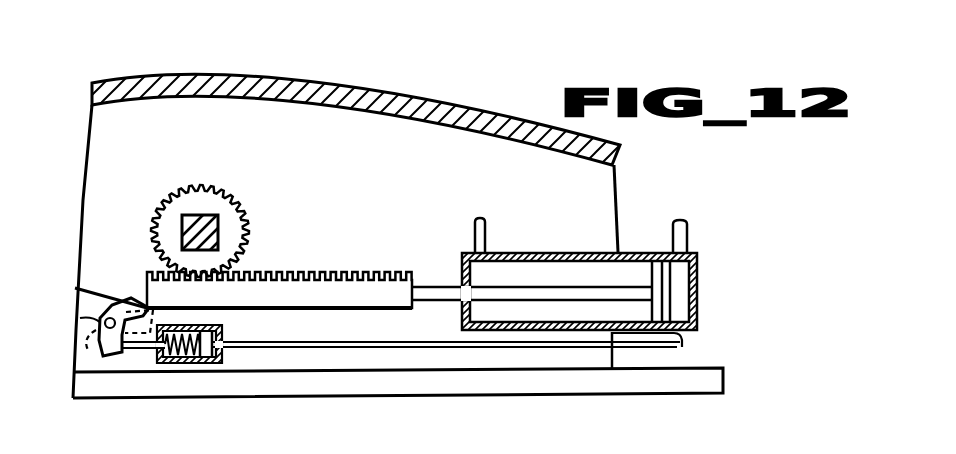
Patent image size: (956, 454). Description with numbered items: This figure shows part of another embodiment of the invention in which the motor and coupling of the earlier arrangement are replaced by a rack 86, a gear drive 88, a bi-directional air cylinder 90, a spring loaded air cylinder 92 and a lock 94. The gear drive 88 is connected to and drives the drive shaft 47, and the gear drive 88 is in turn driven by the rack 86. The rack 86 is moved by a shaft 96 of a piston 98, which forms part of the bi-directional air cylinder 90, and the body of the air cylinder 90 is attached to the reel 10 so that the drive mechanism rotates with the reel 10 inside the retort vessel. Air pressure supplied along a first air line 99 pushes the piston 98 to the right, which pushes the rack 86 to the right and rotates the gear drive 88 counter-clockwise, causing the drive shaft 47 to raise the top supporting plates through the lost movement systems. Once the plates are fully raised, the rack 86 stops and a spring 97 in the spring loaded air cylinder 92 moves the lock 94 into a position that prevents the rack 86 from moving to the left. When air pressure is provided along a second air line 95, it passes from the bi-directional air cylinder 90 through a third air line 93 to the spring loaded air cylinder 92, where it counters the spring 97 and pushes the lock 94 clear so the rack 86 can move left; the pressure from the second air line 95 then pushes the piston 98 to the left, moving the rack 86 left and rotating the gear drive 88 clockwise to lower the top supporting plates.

The reel 10 is at (215, 78).
The drive shaft 47 is at (182, 237).
The rack 86 is at (316, 279).
The gear drive 88 is at (198, 192).
The bi-directional air cylinder 90 is at (642, 248).
The spring loaded air cylinder 92 is at (226, 363).
The third air line 93 is at (650, 350).
The lock 94 is at (92, 322).
The second air line 95 is at (688, 240).
The shaft 96 is at (431, 286).
The spring 97 is at (178, 363).
The piston 98 is at (671, 294).
The first air line 99 is at (474, 225).